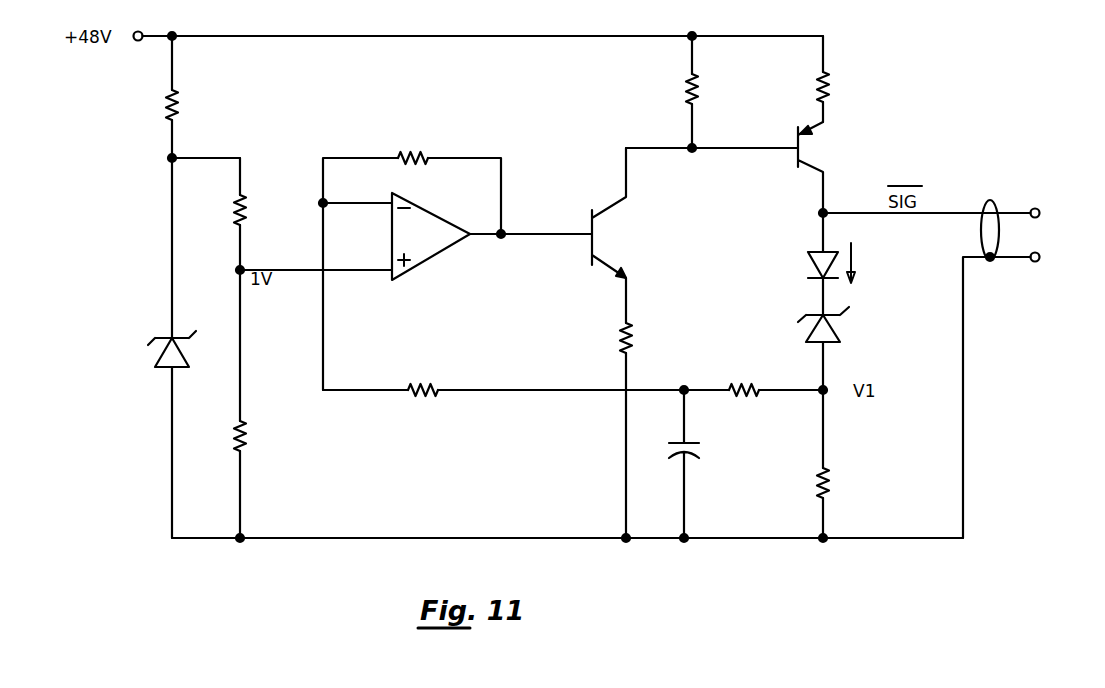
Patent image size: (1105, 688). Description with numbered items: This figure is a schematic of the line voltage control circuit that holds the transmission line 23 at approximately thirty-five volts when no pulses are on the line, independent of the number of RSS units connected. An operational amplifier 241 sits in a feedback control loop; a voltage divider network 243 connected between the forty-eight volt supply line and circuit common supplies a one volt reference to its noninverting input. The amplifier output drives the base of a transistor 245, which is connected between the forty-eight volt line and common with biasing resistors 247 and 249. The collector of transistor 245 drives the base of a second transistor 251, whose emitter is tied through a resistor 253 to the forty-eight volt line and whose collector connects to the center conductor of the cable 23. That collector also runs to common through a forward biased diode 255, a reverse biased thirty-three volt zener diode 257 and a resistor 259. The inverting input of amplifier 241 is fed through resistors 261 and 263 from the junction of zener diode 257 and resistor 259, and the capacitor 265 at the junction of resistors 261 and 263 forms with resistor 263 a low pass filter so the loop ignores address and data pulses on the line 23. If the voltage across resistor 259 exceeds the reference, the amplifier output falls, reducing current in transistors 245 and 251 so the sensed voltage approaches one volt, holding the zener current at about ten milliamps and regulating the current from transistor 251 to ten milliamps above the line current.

The line 23 is at (1012, 208).
The operational amplifier 241 is at (443, 255).
The voltage divider network 243 is at (232, 381).
The transistor 245 is at (616, 207).
The resistor 247 is at (636, 328).
The resistor 249 is at (683, 85).
The second transistor 251 is at (795, 134).
The resistor 253 is at (833, 87).
The forward biased diode 255 is at (808, 262).
The zener diode 257 is at (840, 342).
The resistor 259 is at (832, 473).
The resistor 261 is at (429, 386).
The resistor 263 is at (746, 386).
The capacitor 265 is at (692, 440).